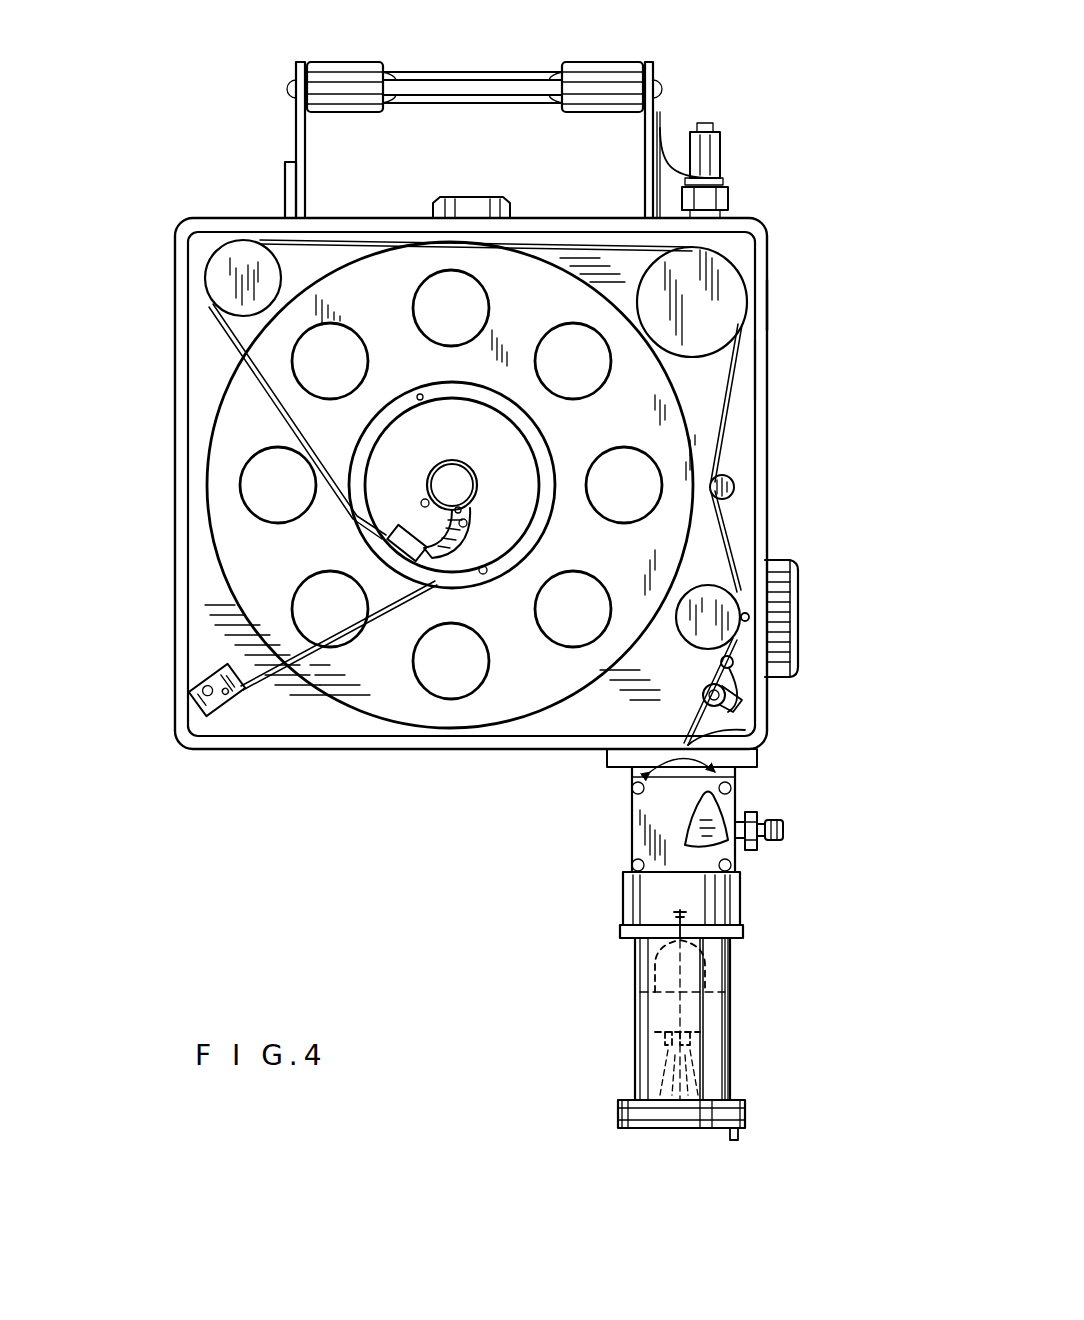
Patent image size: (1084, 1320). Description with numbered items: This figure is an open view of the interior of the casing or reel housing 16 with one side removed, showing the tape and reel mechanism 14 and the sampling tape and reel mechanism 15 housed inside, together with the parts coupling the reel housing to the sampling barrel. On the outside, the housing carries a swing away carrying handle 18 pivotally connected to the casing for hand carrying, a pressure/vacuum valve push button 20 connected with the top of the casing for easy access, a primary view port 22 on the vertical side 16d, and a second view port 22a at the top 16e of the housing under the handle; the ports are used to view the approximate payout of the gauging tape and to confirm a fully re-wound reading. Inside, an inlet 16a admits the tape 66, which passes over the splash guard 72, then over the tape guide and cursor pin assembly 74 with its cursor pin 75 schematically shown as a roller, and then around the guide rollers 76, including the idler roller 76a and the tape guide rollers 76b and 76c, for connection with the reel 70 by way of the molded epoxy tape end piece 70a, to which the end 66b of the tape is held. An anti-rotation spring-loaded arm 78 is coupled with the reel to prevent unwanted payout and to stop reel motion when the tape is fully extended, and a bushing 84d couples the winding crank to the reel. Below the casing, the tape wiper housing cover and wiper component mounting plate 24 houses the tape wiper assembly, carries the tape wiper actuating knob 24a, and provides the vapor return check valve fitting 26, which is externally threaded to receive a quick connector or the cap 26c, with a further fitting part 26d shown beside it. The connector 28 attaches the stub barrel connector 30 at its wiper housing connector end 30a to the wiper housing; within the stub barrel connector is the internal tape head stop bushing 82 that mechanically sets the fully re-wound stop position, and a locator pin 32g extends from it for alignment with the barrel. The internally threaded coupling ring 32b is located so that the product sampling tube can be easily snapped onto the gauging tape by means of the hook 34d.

The tape and reel mechanism 14 is at (162, 276).
The sampling tape and reel mechanism 15 is at (782, 308).
The casing or reel housing 16 is at (772, 400).
The inlet 16a is at (712, 736).
The vertical side 16d is at (762, 366).
The top 16e is at (553, 218).
The swing away carrying handle 18 is at (508, 78).
The pressure/vacuum valve push button 20 is at (726, 152).
The primary view port 22 is at (800, 595).
The second view port 22a is at (478, 197).
The tape wiper housing cover and wiper component mounting plate 24 is at (640, 845).
The tape wiper actuating knob 24a is at (690, 835).
The vapor return check valve fitting 26 is at (780, 810).
The cap 26c is at (785, 828).
The nut 26d is at (759, 834).
The connector 28 is at (742, 912).
The stub barrel connector 30 is at (728, 1045).
The stub barrel wiper housing connector end 30a is at (735, 948).
The internally threaded coupling ring 32b is at (625, 1128).
The locator pin 32g is at (740, 1140).
The hook 34d is at (652, 1085).
The tape 66 is at (215, 335).
The end of tape 66b is at (380, 536).
The reel 70 is at (222, 515).
The molded epoxy tape end piece 70a is at (400, 560).
The splash guard 72 is at (737, 700).
The tape guide and cursor pin assembly 74 is at (714, 586).
The cursor pin 75 is at (750, 622).
The guide rollers 76 is at (740, 728).
The idler roller 76a is at (735, 483).
The tape guide roller 76b is at (722, 300).
The tape guide roller 76c is at (222, 265).
The anti-rotation spring-loaded arm 78 is at (255, 705).
The tape head stop bushing 82 is at (740, 995).
The bushing 84d is at (458, 480).